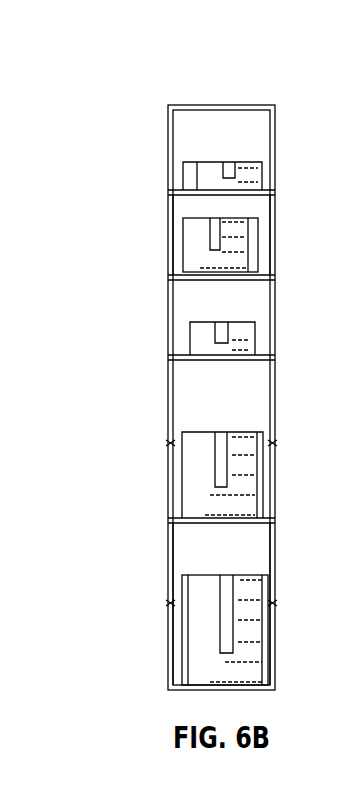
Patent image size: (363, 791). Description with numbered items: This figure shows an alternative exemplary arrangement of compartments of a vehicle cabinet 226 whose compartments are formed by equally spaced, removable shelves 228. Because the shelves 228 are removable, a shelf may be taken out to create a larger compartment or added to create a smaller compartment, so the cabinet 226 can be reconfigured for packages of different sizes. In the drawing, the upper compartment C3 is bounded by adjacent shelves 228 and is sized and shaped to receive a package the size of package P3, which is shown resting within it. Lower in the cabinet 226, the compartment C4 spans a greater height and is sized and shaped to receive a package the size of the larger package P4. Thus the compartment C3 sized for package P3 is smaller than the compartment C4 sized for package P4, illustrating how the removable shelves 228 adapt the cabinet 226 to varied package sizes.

The cabinet 226 is at (126, 62).
The shelves 228 is at (168, 521).
The compartment C3 is at (258, 203).
The package P3 is at (252, 242).
The compartment C4 is at (257, 548).
The package P4 is at (242, 613).